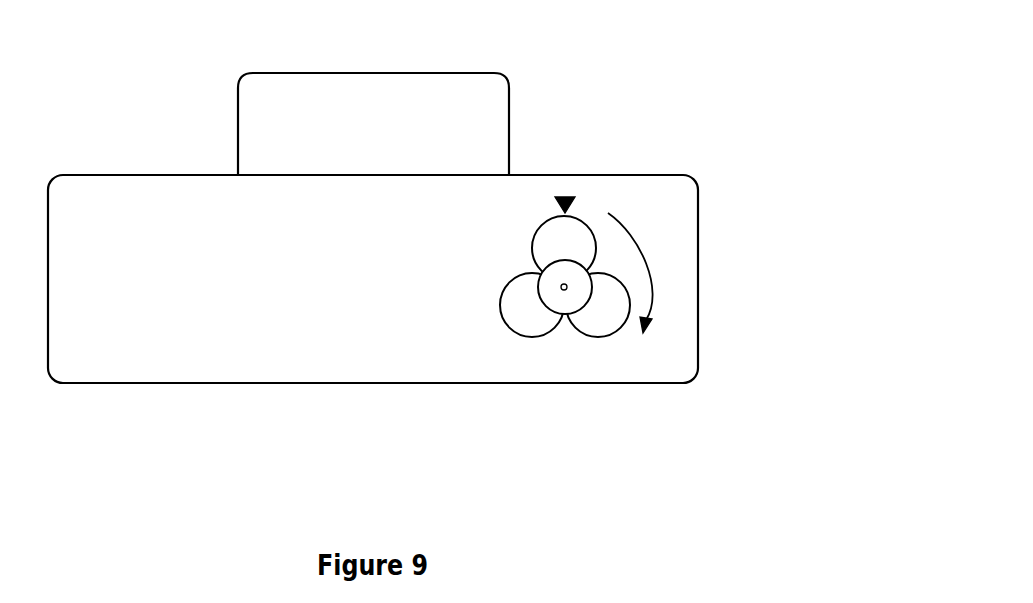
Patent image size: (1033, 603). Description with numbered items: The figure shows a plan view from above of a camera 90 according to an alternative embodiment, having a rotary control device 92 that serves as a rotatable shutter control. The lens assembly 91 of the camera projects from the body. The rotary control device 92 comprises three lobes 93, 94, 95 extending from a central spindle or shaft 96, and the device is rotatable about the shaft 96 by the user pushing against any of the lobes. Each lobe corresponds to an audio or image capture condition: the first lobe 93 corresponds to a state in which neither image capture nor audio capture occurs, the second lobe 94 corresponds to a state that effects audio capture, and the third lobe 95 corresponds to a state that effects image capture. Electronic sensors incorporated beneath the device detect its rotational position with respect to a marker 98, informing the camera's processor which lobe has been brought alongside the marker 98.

The camera 90 is at (525, 82).
The lens assembly 91 is at (263, 105).
The rotary control device 92 is at (560, 362).
The lobe 93 is at (607, 332).
The lobe 94 is at (533, 237).
The lobe 95 is at (500, 308).
The central spindle or shaft 96 is at (561, 287).
The marker 98 is at (565, 197).